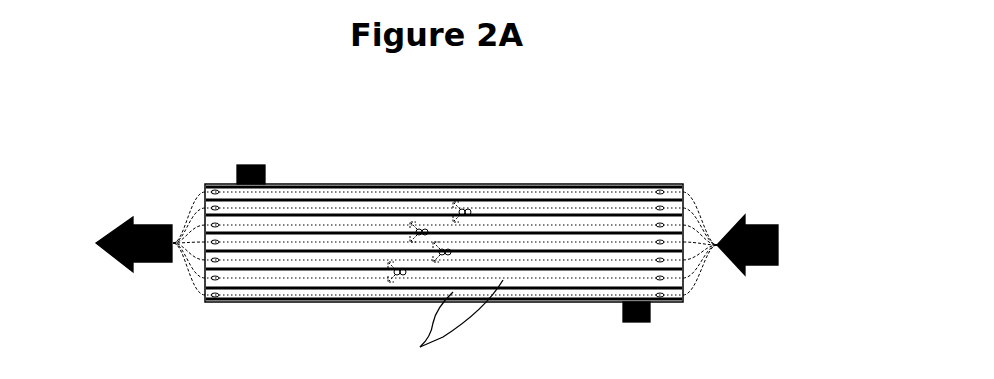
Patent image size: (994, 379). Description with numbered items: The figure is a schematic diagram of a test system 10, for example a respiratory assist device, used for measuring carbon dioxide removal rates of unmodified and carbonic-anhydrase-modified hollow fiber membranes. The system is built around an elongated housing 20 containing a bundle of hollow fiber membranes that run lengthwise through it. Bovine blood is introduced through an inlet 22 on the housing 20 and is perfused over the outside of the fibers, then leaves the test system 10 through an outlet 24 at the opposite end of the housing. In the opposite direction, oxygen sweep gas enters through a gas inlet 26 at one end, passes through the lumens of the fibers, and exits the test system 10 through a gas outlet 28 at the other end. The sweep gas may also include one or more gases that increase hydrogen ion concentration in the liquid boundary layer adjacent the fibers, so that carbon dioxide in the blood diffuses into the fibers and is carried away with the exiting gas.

The test system 10 is at (525, 181).
The housing 20 is at (373, 184).
The inlet 22 is at (266, 172).
The outlet 24 is at (622, 313).
The gas inlet 26 is at (688, 189).
The gas outlet 28 is at (198, 302).